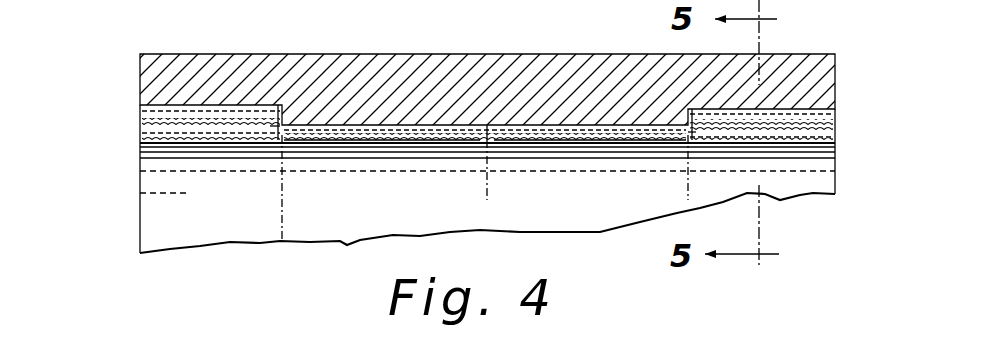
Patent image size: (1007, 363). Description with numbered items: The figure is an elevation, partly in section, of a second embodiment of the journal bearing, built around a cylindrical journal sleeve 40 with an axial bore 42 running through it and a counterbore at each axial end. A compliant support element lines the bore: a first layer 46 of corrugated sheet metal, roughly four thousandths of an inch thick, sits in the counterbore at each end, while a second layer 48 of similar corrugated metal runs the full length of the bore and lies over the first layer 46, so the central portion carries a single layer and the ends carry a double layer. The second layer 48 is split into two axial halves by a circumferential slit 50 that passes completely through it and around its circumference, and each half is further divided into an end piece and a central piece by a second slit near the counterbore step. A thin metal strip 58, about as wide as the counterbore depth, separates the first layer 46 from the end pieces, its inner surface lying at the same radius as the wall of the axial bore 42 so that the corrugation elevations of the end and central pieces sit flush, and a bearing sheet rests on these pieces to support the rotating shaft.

The journal sleeve 40 is at (378, 58).
The axial bore 42 is at (563, 128).
The first layer 46 is at (137, 116).
The second layer 48 is at (136, 134).
The circumferential slit 50 is at (478, 137).
The thin metal strip 58 is at (836, 126).